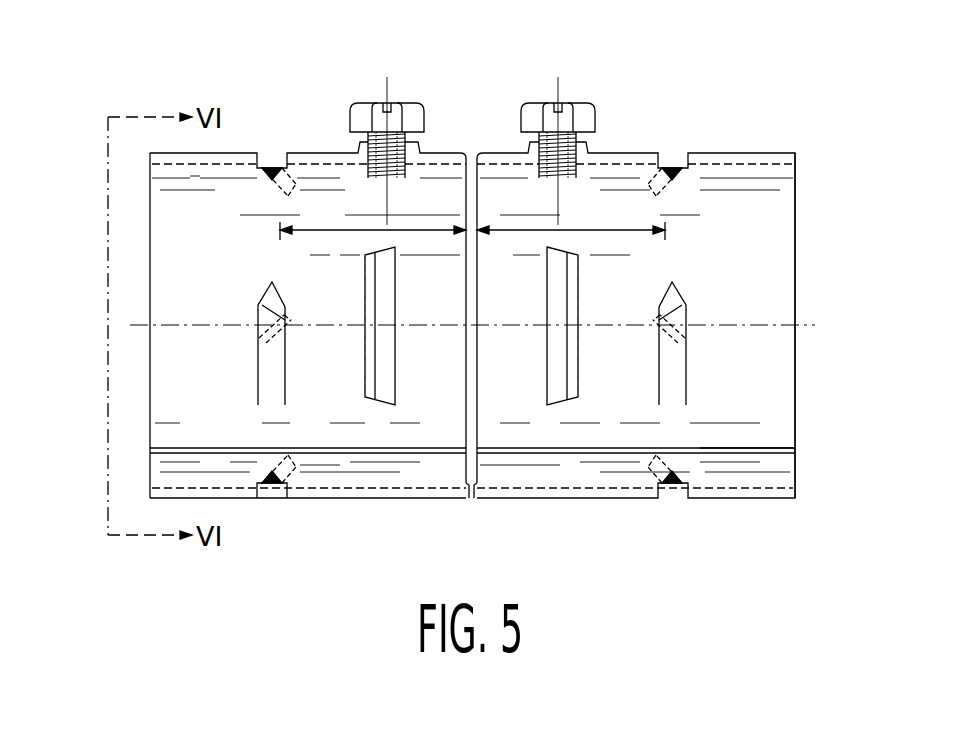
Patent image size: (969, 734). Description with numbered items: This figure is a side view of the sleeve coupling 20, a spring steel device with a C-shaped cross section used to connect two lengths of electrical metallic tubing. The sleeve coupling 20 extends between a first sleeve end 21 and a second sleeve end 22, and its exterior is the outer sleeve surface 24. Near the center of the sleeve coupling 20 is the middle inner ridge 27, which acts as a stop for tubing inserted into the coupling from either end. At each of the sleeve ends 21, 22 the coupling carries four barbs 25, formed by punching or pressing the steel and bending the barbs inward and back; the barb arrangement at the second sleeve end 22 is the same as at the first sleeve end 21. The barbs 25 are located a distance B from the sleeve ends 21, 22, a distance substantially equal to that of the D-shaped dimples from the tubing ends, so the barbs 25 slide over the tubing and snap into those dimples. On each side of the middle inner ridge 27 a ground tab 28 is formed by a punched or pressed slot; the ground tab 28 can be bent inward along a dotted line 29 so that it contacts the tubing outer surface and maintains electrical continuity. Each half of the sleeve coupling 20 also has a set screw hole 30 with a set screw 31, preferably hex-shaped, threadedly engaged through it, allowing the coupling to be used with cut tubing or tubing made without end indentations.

The sleeve coupling 20 is at (769, 123).
The first sleeve end 21 is at (150, 400).
The second sleeve end 22 is at (795, 300).
The outer sleeve surface 24 is at (745, 413).
The barbs 25 is at (273, 170).
The middle inner ridge 27 is at (470, 158).
The ground tab 28 is at (375, 372).
The dotted line 29 is at (365, 288).
The set screw hole 30 is at (357, 152).
The set screw 31 is at (403, 103).
The distance B is at (305, 228).